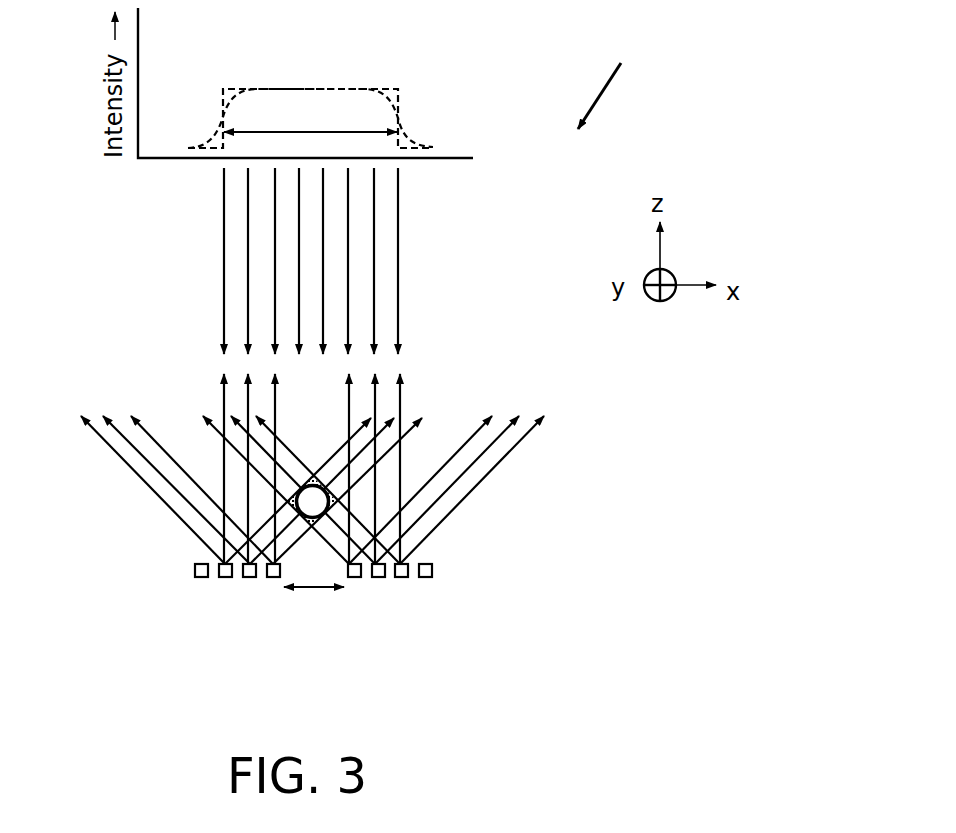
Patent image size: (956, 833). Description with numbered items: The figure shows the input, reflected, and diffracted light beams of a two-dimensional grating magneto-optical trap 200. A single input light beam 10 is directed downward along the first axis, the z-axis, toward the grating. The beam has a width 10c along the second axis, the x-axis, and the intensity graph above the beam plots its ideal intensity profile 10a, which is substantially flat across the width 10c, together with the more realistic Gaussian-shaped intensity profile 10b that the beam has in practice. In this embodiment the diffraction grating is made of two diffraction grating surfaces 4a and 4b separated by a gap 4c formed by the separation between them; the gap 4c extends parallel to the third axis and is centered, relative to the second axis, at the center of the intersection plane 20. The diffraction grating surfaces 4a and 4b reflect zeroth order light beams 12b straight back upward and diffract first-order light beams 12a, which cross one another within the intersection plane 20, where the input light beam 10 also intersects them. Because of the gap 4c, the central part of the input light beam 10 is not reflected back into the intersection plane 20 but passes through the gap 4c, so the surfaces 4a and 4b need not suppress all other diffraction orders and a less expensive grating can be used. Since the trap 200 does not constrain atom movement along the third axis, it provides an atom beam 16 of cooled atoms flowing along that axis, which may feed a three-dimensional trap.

The magneto-optical trap 200 is at (637, 82).
The input light beam 10 is at (400, 253).
The ideal intensity profile 10a is at (400, 91).
The Gaussian-shaped intensity profile 10b is at (412, 141).
The width 10c is at (336, 132).
The first-order light beams 12a is at (207, 418).
The zeroth order light beams 12b is at (400, 397).
The diffraction grating surface 4a is at (240, 560).
The diffraction grating surface 4b is at (427, 563).
The gap 4c is at (318, 588).
The atom beam 16 is at (308, 527).
The intersection plane 20 is at (336, 500).